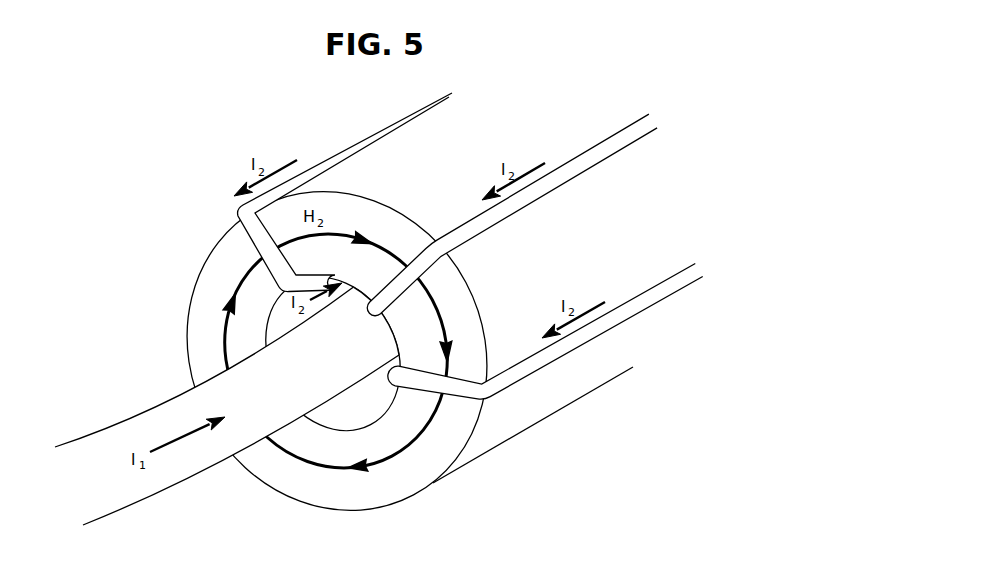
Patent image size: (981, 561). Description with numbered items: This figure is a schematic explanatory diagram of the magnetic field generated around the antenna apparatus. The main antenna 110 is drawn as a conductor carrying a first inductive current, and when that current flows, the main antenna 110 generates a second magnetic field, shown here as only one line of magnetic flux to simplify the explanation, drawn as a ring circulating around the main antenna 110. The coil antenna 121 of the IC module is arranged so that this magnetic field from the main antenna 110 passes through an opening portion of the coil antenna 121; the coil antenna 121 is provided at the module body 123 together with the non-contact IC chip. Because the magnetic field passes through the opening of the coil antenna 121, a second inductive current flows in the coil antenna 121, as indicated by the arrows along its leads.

The main antenna 110 is at (125, 420).
The coil antenna 121 is at (572, 346).
The module body 123 is at (520, 413).